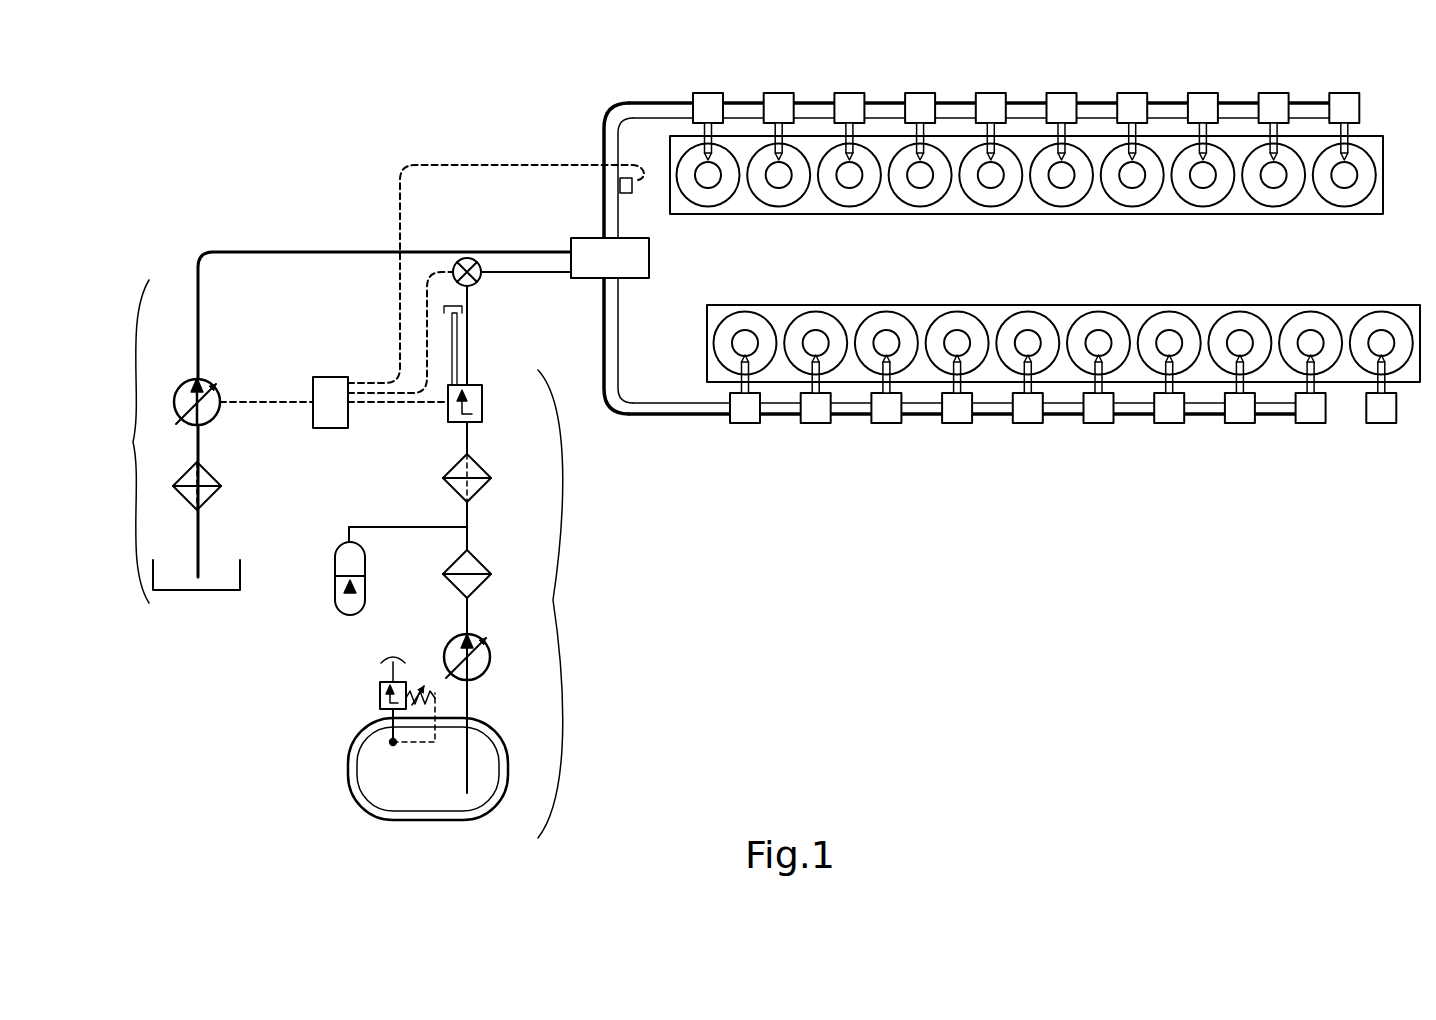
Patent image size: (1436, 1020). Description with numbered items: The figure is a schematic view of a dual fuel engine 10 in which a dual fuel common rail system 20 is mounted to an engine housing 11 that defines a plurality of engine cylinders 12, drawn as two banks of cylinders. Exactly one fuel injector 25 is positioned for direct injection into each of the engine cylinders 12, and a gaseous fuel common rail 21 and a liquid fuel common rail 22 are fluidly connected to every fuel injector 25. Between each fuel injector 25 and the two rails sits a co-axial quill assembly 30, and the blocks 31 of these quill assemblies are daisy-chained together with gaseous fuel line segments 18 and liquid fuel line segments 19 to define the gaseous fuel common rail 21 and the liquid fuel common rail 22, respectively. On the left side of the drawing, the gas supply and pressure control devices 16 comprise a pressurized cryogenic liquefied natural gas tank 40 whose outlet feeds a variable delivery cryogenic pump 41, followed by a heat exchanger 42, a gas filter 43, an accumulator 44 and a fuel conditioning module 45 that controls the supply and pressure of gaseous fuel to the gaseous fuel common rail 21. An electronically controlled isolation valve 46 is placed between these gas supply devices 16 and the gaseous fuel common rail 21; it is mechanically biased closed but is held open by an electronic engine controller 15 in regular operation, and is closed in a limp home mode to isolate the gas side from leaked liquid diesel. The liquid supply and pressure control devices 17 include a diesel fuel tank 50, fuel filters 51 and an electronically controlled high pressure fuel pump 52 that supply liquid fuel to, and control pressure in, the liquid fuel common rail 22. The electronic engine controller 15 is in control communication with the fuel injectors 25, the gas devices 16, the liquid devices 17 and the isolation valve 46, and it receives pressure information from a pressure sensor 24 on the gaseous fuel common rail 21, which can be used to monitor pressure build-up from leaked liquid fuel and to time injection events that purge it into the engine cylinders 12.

The dual fuel engine 10 is at (1013, 276).
The engine housing 11 is at (752, 214).
The engine cylinders 12 is at (832, 196).
The electronic engine controller 15 is at (330, 377).
The gas supply and pressure control devices 16 is at (565, 604).
The liquid supply and pressure control devices 17 is at (128, 441).
The gaseous fuel line segments 18 is at (1093, 121).
The liquid fuel line segments 19 is at (1168, 103).
The dual fuel common rail system 20 is at (1036, 66).
The gaseous fuel common rail 21 is at (883, 114).
The liquid fuel common rail 22 is at (1093, 106).
The pressure sensor 24 is at (630, 193).
The fuel injector 25 is at (926, 186).
The co-axial quill assembly 30 is at (989, 91).
The blocks 31 is at (848, 93).
The pressurized cryogenic liquefied natural gas tank 40 is at (508, 770).
The variable delivery cryogenic pump 41 is at (490, 670).
The heat exchanger 42 is at (491, 574).
The gas filter 43 is at (491, 478).
The accumulator 44 is at (365, 575).
The fuel conditioning module 45 is at (482, 400).
The electronically controlled isolation valve 46 is at (482, 275).
The diesel fuel tank 50 is at (240, 562).
The fuel filters 51 is at (221, 486).
The electronically controlled high pressure fuel pump 52 is at (222, 410).